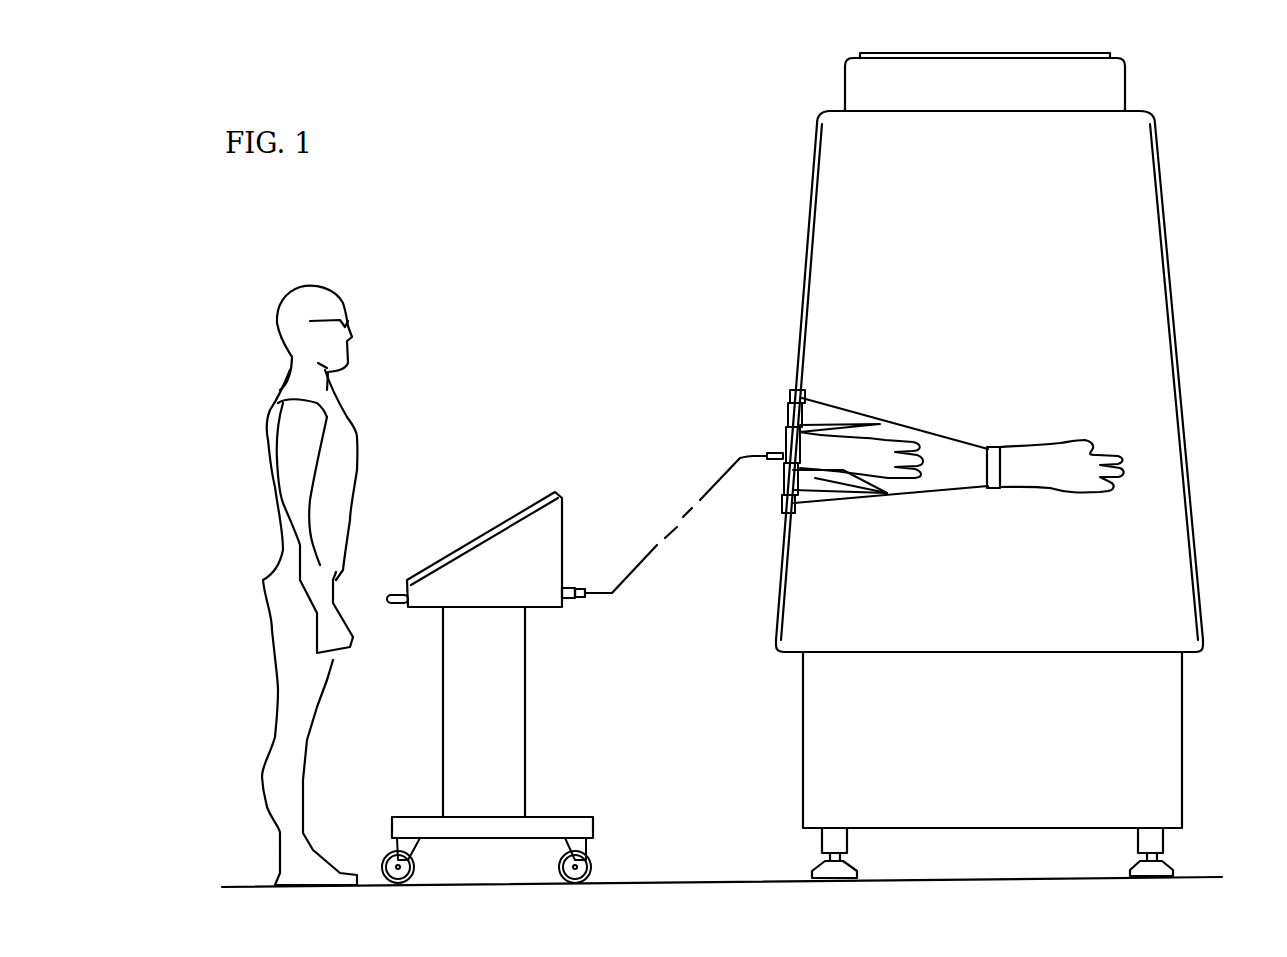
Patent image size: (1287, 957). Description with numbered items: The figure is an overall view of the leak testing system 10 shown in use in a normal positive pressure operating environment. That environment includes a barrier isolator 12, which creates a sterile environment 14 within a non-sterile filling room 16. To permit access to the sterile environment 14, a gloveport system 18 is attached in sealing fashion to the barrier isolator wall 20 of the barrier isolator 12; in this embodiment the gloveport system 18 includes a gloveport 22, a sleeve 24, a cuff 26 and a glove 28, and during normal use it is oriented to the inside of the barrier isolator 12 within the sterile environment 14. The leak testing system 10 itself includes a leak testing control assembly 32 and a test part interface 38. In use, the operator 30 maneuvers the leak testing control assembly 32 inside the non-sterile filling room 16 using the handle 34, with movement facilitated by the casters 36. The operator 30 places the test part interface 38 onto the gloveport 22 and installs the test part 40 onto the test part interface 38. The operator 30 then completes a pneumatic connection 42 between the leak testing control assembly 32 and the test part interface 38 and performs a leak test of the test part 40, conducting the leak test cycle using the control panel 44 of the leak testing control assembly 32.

The leak testing system 10 is at (770, 350).
The barrier isolator 12 is at (810, 177).
The sterile environment 14 is at (915, 227).
The non-sterile filling room 16 is at (720, 223).
The gloveport system 18 is at (957, 424).
The barrier isolator wall 20 is at (806, 330).
The gloveport 22 is at (803, 397).
The sleeve 24 is at (880, 502).
The cuff 26 is at (990, 489).
The glove 28 is at (1063, 498).
The operator 30 is at (347, 417).
The leak testing control assembly 32 is at (527, 729).
The handle 34 is at (390, 593).
The casters 36 is at (595, 862).
The test part interface 38 is at (782, 436).
The test part 40 is at (893, 437).
The pneumatic connection 42 is at (668, 530).
The control panel 44 is at (527, 500).